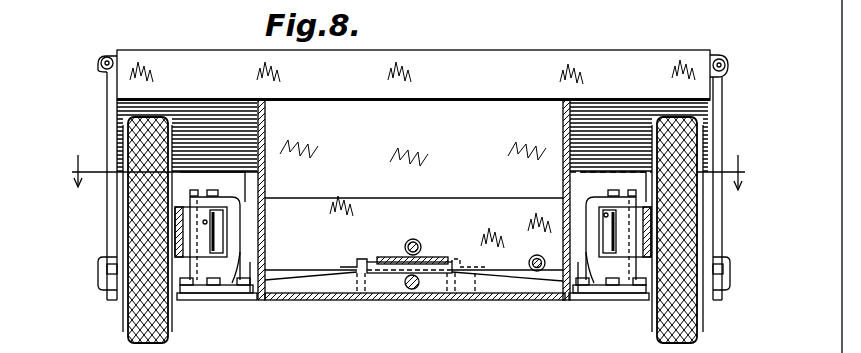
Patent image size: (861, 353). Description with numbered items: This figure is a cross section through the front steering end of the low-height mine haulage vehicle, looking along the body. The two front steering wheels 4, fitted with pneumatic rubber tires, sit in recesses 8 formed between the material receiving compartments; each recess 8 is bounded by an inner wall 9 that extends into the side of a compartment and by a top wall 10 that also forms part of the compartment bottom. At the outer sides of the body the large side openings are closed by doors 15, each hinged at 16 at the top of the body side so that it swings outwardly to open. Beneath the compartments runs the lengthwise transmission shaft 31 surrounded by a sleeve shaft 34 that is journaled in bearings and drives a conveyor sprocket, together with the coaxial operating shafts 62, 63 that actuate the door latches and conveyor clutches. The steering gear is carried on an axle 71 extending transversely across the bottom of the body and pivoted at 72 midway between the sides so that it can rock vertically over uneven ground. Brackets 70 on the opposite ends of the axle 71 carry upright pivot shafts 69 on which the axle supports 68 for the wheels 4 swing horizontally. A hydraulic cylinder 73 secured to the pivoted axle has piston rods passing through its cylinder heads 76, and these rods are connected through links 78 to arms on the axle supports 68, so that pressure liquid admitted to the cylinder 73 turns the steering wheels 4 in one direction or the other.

The steering wheel 4 is at (140, 312).
The recess 8 is at (208, 122).
The inner wall 9 is at (563, 110).
The top wall 10 is at (490, 113).
The door 15 is at (112, 121).
The hinge 16 is at (101, 63).
The transmission shaft 31 is at (418, 241).
The sleeve shaft 34 is at (410, 240).
The operating shaft 62 is at (540, 271).
The operating shaft 63 is at (535, 271).
The axle support 68 is at (190, 232).
The upright pivot shaft 69 is at (205, 222).
The bracket 70 is at (230, 260).
The axle 71 is at (330, 285).
The pivot 72 is at (416, 276).
The hydraulic cylinder 73 is at (425, 293).
The cylinder head 76 is at (360, 265).
The link 78 is at (249, 272).